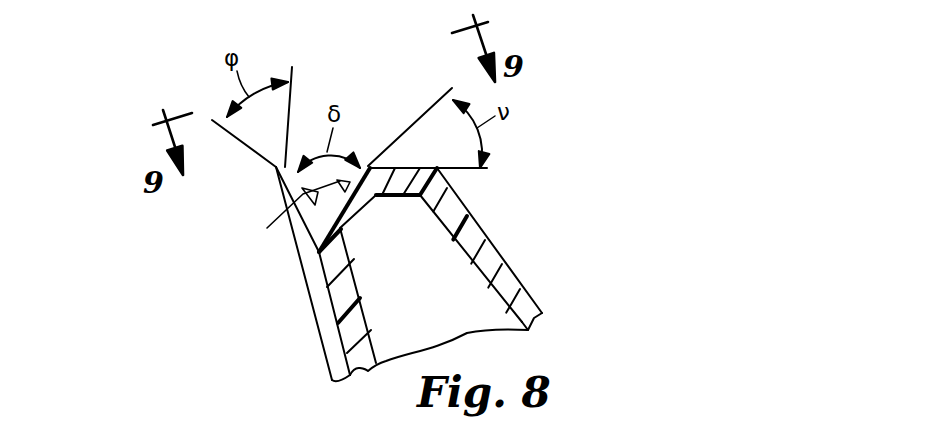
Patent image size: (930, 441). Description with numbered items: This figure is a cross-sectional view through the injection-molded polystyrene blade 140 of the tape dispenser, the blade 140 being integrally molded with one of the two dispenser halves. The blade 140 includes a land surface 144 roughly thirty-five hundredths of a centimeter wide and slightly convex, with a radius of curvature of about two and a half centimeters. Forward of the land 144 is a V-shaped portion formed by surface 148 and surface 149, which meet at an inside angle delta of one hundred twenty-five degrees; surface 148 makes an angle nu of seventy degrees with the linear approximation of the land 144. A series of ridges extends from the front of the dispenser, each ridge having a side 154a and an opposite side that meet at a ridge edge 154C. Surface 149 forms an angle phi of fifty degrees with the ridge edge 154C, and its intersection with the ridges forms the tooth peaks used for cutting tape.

The polystyrene blade 140 is at (468, 233).
The land surface 144 is at (413, 168).
The surface of the V-groove 148 is at (361, 199).
The surface of the V-shaped groove 149 is at (288, 217).
The side of ridge 154a is at (266, 274).
The ridge edge 154C is at (274, 181).